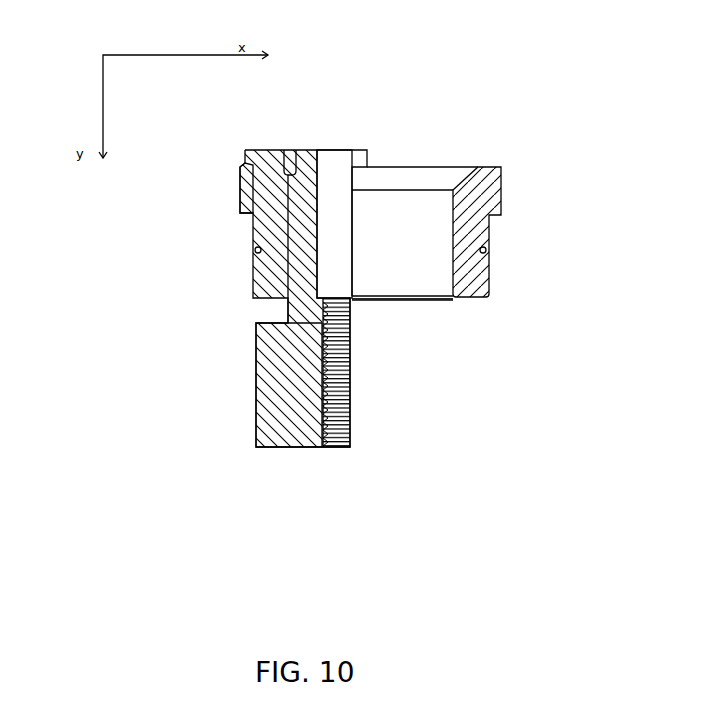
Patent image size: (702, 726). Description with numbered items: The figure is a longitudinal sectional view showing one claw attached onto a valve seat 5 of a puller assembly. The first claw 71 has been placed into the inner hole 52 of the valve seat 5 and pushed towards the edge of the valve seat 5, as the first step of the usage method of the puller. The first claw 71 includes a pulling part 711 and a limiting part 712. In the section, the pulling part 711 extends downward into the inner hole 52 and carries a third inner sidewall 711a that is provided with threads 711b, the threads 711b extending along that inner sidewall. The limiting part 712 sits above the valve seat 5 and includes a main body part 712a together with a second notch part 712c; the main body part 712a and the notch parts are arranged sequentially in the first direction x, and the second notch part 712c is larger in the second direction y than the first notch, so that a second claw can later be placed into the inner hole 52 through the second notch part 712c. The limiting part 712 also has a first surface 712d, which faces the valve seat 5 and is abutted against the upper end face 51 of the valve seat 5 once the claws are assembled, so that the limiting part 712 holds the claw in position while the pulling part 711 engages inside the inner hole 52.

The valve seat 5 is at (532, 287).
The upper end face 51 is at (468, 180).
The inner hole 52 is at (415, 263).
The first claw 71 is at (252, 402).
The pulling part 711 is at (275, 412).
The third inner sidewall 711a is at (390, 409).
The threads 711b is at (350, 410).
The limiting part 712 is at (261, 288).
The main body part 712a is at (292, 198).
The second notch part 712c is at (330, 150).
The first surface 712d is at (255, 160).